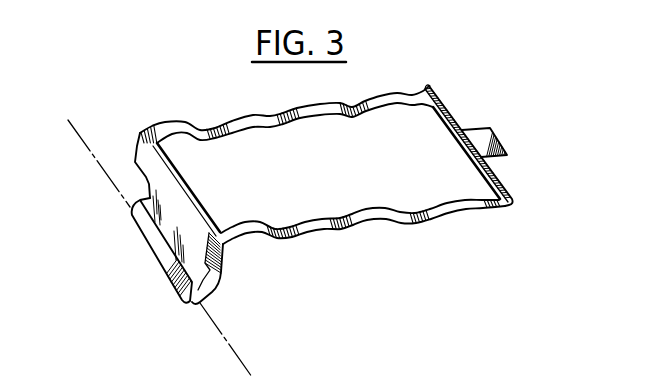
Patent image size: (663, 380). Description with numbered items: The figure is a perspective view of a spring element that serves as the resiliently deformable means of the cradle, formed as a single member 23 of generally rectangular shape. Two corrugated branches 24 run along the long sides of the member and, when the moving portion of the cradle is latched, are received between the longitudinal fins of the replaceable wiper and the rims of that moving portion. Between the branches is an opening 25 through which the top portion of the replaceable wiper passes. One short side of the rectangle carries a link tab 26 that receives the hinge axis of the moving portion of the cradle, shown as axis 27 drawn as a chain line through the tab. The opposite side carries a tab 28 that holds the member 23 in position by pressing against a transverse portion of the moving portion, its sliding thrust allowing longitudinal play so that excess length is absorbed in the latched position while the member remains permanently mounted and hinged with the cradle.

The single member 23 is at (358, 231).
The corrugated branches 24 is at (242, 125).
The opening 25 is at (324, 194).
The link tab 26 is at (170, 267).
The axis 27 is at (252, 375).
The tab 28 is at (497, 137).